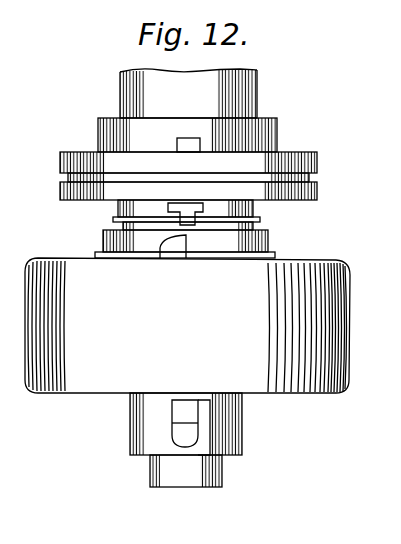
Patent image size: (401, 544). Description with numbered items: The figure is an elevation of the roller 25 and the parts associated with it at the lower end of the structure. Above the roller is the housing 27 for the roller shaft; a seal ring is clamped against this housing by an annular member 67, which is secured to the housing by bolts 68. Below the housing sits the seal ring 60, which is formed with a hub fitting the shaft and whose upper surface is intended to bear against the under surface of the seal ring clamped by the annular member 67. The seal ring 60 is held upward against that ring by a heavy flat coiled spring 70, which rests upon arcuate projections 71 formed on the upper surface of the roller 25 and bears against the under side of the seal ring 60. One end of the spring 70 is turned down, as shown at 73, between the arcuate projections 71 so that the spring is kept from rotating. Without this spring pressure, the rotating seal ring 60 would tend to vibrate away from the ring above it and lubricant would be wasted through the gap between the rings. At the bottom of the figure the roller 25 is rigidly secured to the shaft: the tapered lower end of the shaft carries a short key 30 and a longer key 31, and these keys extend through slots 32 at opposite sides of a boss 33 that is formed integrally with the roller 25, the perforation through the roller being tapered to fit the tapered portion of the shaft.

The roller 25 is at (349, 300).
The housing 27 is at (252, 104).
The short key 30 is at (175, 408).
The longer key 31 is at (184, 438).
The slots 32 is at (200, 446).
The boss 33 is at (145, 427).
The seal ring 60 is at (253, 207).
The annular member 67 is at (318, 191).
The bolts 68 is at (182, 140).
The heavy flat coiled spring 70 is at (270, 244).
The arcuate projections 71 is at (141, 258).
The turned-down end of spring 73 is at (176, 258).